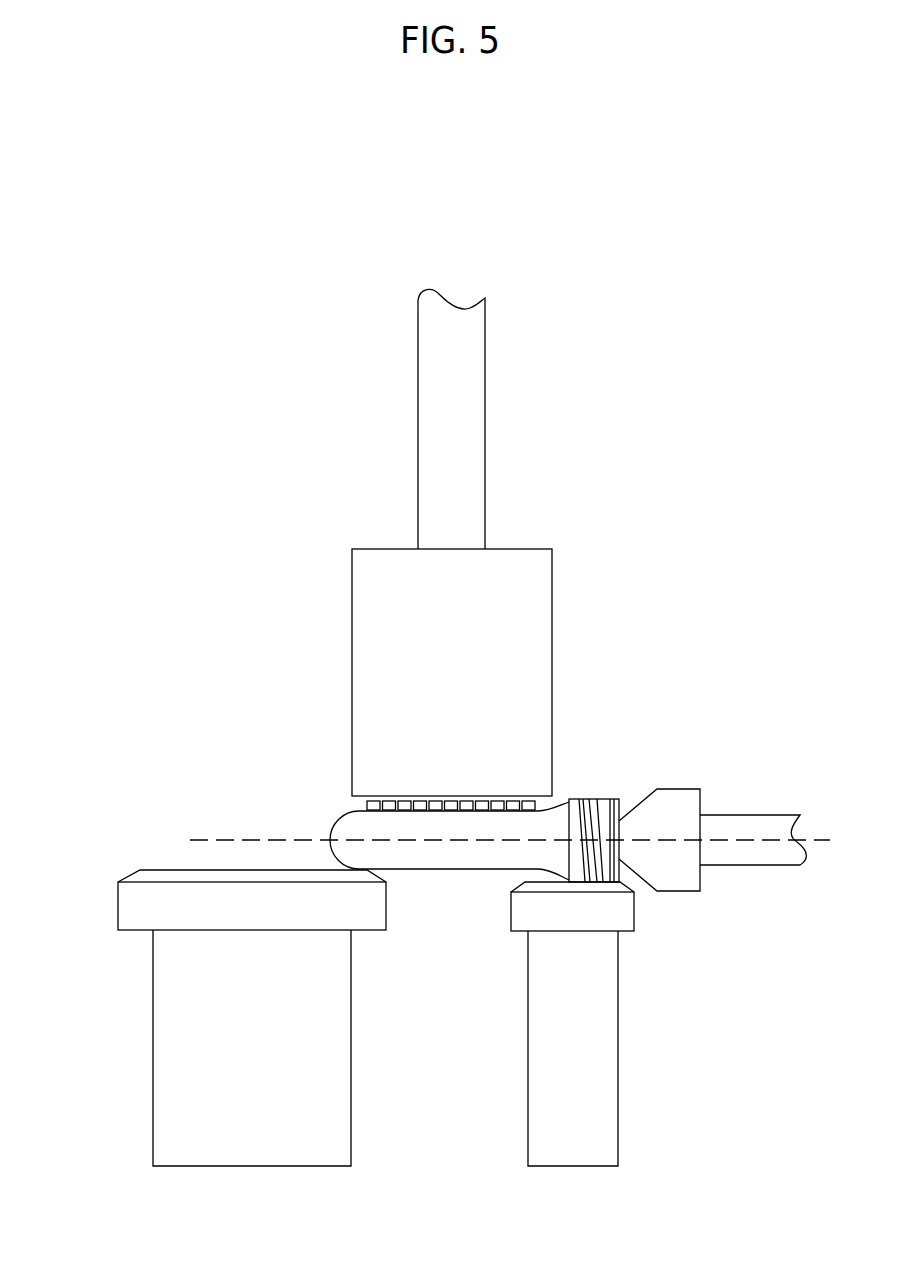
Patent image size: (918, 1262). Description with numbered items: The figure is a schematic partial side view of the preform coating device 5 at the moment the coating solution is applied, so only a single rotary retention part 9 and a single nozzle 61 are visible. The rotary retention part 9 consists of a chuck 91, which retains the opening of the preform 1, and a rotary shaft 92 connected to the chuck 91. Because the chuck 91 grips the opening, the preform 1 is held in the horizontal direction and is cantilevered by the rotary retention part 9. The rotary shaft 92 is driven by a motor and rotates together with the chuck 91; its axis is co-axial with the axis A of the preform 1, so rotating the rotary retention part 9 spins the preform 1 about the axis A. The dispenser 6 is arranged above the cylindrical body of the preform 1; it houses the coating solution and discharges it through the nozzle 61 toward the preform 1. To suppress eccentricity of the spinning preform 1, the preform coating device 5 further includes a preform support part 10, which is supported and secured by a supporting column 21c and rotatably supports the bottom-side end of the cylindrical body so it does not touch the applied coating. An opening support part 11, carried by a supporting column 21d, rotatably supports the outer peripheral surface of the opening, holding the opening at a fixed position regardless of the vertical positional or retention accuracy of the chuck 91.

The preform 1 is at (480, 872).
The preform coating device 5 is at (175, 385).
The dispenser 6 is at (524, 437).
The nozzle 61 is at (552, 615).
The rotary retention part 9 is at (743, 798).
The chuck 91 is at (680, 893).
The rotary shaft 92 is at (772, 866).
The preform support part 10 is at (117, 905).
The opening support part 11 is at (627, 931).
The supporting column 21c is at (352, 1108).
The supporting column 21d is at (618, 1128).
The axis A is at (226, 840).